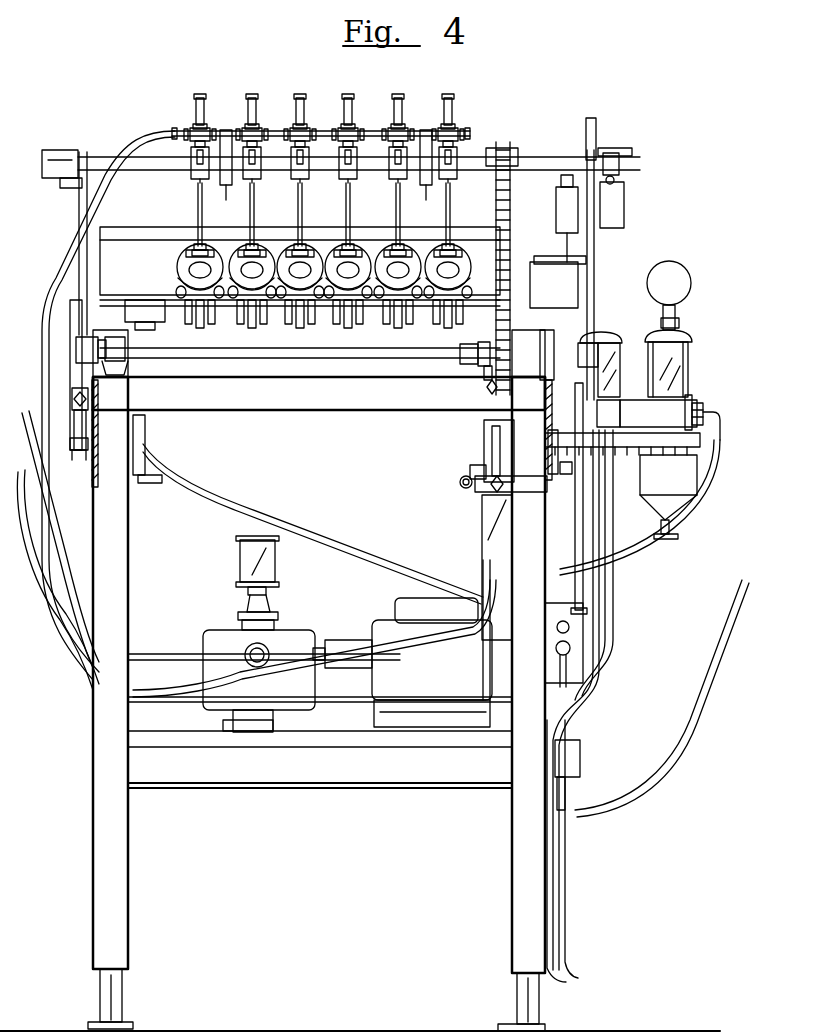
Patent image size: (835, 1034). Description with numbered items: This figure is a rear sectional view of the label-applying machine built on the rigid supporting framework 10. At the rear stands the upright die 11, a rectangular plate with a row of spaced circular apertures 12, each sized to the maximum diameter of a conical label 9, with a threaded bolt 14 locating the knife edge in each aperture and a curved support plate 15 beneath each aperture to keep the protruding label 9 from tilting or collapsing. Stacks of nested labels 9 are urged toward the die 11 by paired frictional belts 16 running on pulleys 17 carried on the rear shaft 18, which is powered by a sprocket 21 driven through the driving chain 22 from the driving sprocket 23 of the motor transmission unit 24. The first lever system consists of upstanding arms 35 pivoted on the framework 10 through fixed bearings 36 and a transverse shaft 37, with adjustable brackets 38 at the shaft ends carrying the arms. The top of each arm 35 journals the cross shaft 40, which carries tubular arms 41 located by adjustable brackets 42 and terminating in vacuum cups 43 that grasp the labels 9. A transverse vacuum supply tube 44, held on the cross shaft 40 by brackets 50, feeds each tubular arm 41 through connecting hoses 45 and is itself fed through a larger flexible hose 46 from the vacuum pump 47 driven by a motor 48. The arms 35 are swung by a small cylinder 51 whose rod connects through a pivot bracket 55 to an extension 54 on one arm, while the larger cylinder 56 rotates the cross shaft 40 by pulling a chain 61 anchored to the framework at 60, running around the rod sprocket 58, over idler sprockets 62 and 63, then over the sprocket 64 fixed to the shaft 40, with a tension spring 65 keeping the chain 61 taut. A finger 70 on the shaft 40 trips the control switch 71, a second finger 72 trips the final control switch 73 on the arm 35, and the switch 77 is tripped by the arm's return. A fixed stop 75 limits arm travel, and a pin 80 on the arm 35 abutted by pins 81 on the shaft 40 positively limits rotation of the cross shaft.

The label 9 is at (232, 262).
The framework 10 is at (310, 412).
The die 11 is at (140, 254).
The aperture 12 is at (180, 268).
The bolt 14 is at (246, 232).
The curved support plate 15 is at (324, 318).
The belt 16 is at (190, 322).
The pulley 17 is at (254, 325).
The rear shaft 18 is at (178, 312).
The sprocket 21 is at (62, 280).
The driving chain 22 is at (74, 420).
The driving sprocket 23 is at (72, 458).
The motor transmission unit 24 is at (146, 431).
The upstanding arm 35 is at (79, 212).
The fixed bearing 36 is at (114, 376).
The transverse shaft 37 is at (190, 358).
The adjustable bracket 38 is at (76, 346).
The cross shaft 40 is at (528, 156).
The tubular arm 41 is at (198, 197).
The adjustable bracket 42 is at (191, 155).
The vacuum cup 43 is at (192, 252).
The vacuum supply tube 44 is at (332, 128).
The connecting hose 45 is at (207, 108).
The flexible hose 46 is at (146, 140).
The vacuum pump 47 is at (300, 652).
The motor 48 is at (432, 676).
The bracket 50 is at (323, 170).
The small cylinder 51 is at (548, 447).
The extension 54 is at (576, 395).
The pivot bracket 55 is at (560, 466).
The larger cylinder 56 is at (458, 478).
The sprocket 58 is at (470, 470).
The chain anchor 60 is at (490, 488).
The chain 61 is at (511, 210).
The idler sprocket 62 is at (484, 436).
The idler sprocket 63 is at (482, 370).
The sprocket 64 is at (505, 148).
The tension spring 65 is at (470, 344).
The finger 70 is at (592, 150).
The control switch 71 is at (560, 205).
The finger 72 is at (620, 160).
The final control switch 73 is at (624, 208).
The fixed stop 75 is at (72, 399).
The switch 77 is at (545, 265).
The pin 80 is at (62, 184).
The pin 81 is at (57, 164).